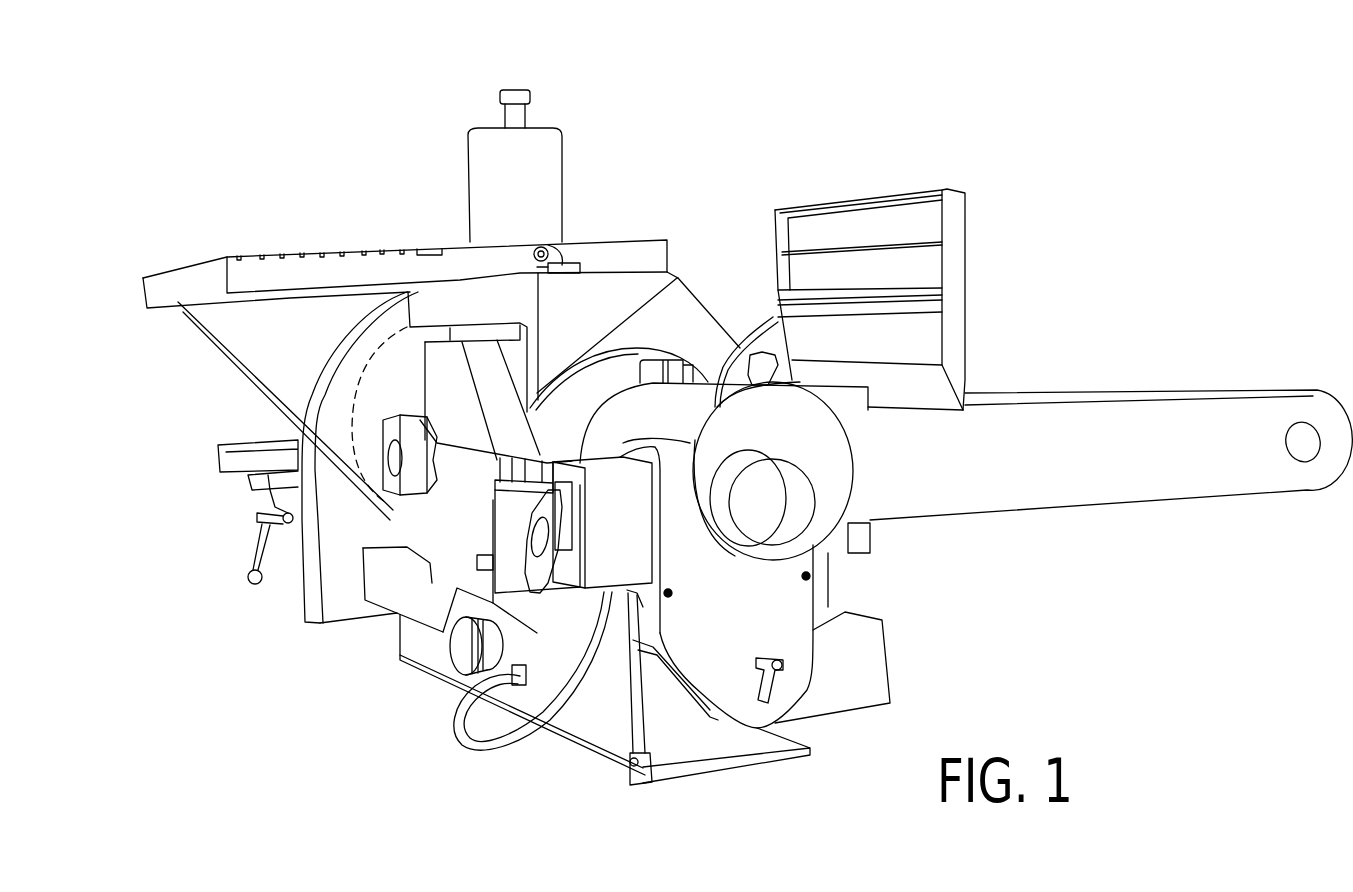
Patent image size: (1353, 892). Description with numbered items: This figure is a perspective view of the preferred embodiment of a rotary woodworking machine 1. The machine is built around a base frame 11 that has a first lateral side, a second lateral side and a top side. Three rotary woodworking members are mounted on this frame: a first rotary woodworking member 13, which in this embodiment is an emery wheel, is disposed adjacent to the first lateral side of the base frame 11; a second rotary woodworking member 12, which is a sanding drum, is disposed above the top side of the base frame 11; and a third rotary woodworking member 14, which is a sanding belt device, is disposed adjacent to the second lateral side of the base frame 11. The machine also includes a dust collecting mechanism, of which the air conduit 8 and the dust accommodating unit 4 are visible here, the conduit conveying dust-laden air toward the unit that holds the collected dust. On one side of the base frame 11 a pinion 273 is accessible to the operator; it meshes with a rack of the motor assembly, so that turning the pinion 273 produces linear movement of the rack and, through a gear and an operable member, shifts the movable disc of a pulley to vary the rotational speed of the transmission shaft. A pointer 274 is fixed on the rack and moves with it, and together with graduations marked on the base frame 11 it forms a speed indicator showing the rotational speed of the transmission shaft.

The rotary woodworking machine 1 is at (742, 125).
The dust accommodating unit 4 is at (688, 705).
The air conduit 8 is at (423, 630).
The base frame 11 is at (715, 340).
The second rotary woodworking member 12 is at (547, 195).
The first rotary woodworking member 13 is at (367, 387).
The third rotary woodworking member 14 is at (1028, 395).
The pinion 273 is at (392, 438).
The pointer 274 is at (515, 473).